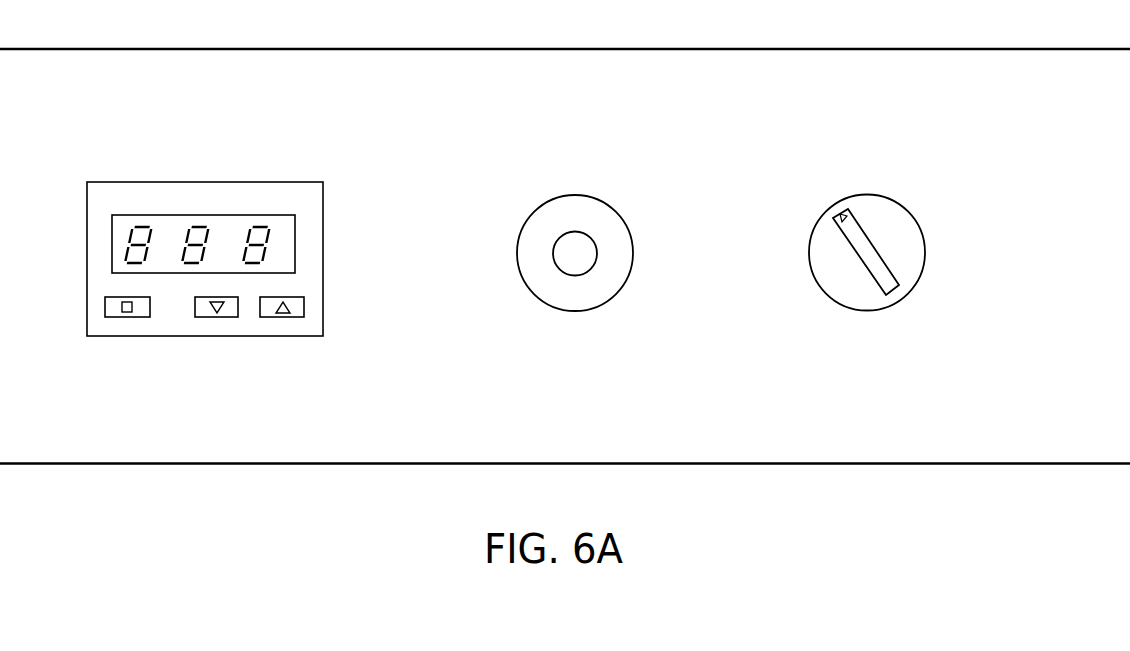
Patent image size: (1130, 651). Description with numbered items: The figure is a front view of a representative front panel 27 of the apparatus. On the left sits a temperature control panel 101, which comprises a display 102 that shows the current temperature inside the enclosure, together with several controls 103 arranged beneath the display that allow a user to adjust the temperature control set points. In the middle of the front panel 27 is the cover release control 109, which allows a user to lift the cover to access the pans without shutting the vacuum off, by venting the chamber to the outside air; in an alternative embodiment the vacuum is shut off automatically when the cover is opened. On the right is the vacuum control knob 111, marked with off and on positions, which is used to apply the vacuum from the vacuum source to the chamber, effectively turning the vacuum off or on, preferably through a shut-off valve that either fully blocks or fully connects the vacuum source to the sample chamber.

The front panel 27 is at (875, 465).
The temperature control panel 101 is at (232, 182).
The display 102 is at (295, 244).
The controls 103 is at (105, 309).
The cover release control 109 is at (577, 312).
The vacuum control knob 111 is at (867, 310).